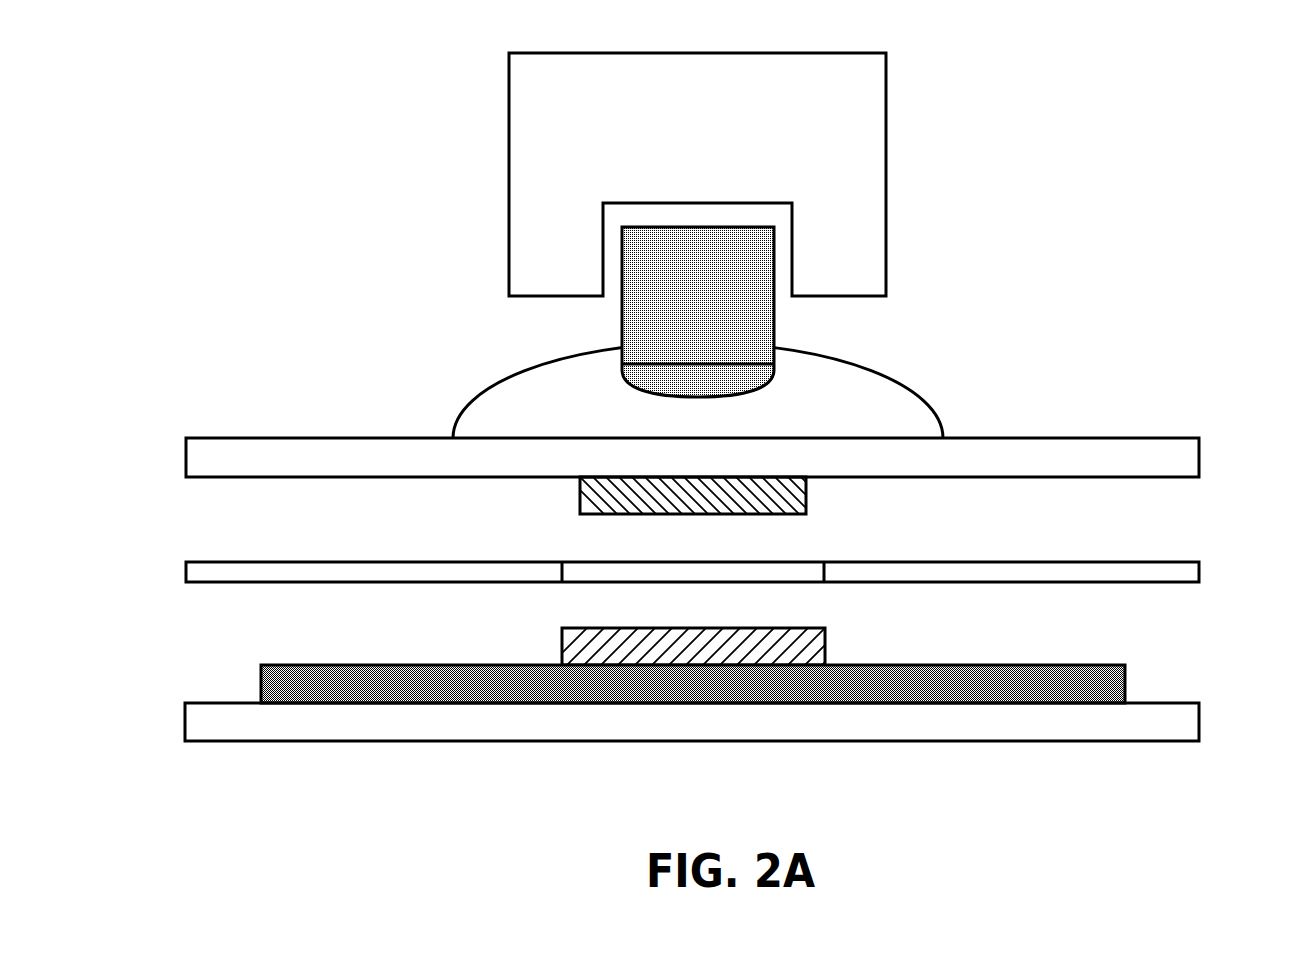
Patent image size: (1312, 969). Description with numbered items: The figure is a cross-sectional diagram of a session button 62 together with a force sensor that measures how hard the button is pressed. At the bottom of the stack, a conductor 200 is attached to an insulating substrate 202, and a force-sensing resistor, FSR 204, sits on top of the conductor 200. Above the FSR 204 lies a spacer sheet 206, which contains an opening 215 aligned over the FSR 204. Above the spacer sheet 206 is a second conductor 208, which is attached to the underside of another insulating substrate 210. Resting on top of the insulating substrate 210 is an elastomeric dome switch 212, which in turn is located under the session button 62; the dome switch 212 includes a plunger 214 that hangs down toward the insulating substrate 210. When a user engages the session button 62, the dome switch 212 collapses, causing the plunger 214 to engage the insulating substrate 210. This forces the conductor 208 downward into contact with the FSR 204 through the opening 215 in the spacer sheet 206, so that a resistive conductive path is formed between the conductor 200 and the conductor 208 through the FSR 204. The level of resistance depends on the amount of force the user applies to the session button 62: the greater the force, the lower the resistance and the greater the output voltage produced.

The session button 62 is at (887, 63).
The elastomeric dome switch 212 is at (900, 377).
The plunger 214 is at (774, 365).
The insulating substrate 210 is at (1199, 440).
The conductor 208 is at (806, 497).
The spacer sheet 206 is at (1199, 566).
The opening 215 is at (563, 561).
The FSR 204 is at (827, 643).
The conductor 200 is at (1117, 665).
The insulating substrate 202 is at (1197, 703).